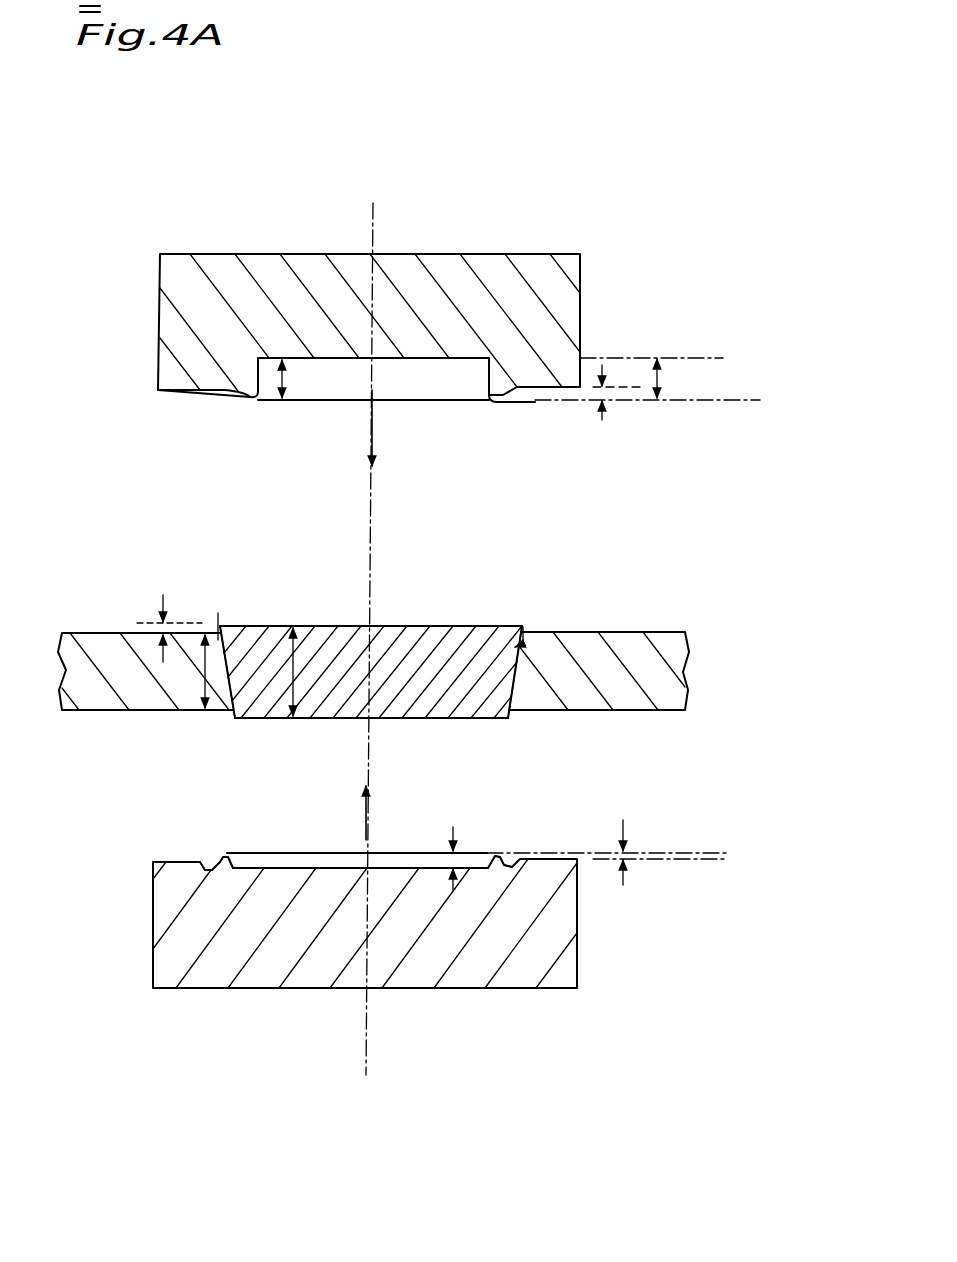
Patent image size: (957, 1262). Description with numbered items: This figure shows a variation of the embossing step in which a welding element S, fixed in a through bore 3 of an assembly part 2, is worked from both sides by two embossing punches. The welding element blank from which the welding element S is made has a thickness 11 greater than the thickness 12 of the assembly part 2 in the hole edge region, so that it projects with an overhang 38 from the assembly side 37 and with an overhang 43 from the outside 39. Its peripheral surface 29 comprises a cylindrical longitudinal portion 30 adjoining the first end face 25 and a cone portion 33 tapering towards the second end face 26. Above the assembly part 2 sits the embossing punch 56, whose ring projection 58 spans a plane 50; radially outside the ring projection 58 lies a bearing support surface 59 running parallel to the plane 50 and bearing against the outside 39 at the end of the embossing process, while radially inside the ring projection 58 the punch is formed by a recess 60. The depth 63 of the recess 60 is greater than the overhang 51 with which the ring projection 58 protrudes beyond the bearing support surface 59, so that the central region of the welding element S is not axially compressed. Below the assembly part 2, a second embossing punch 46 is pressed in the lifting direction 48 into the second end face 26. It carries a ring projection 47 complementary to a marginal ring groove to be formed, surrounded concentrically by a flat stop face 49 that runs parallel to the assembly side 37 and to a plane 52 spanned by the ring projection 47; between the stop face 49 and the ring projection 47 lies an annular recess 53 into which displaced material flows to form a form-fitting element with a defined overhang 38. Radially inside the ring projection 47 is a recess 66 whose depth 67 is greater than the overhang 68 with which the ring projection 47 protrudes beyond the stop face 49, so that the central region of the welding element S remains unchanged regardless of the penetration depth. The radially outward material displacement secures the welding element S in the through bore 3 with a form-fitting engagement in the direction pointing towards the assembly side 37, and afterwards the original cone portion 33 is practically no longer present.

The assembly part 2 is at (642, 674).
The through bore 3 is at (230, 677).
The thickness of the welding element blank 11 is at (315, 714).
The thickness of the assembly part 12 is at (203, 677).
The first end face 25 is at (300, 626).
The second end face 26 is at (264, 717).
The peripheral surface 29 is at (521, 667).
The cylindrical longitudinal portion 30 is at (397, 643).
The cone portion 33 is at (515, 680).
The assembly side 37 is at (123, 712).
The overhang on the assembly side 38 is at (234, 715).
The outside 39 is at (623, 631).
The overhang on the outside 43 is at (163, 600).
The embossing punch 46 is at (555, 947).
The ring projection 47 is at (500, 860).
The lifting direction 48 is at (370, 427).
The stop face 49 is at (177, 862).
The plane 50 is at (757, 400).
The overhang of the ring projection 51 is at (602, 417).
The plane 52 is at (682, 849).
The annular recess 53 is at (207, 862).
The embossing punch 56 is at (560, 285).
The ring projection 58 is at (247, 397).
The bearing support surface 59 is at (185, 388).
The recess 60 is at (436, 362).
The depth of the recess 63 is at (281, 398).
The recess 66 is at (247, 868).
The depth of the recess 67 is at (453, 869).
The overhang 68 is at (623, 868).
The welding element S is at (468, 659).